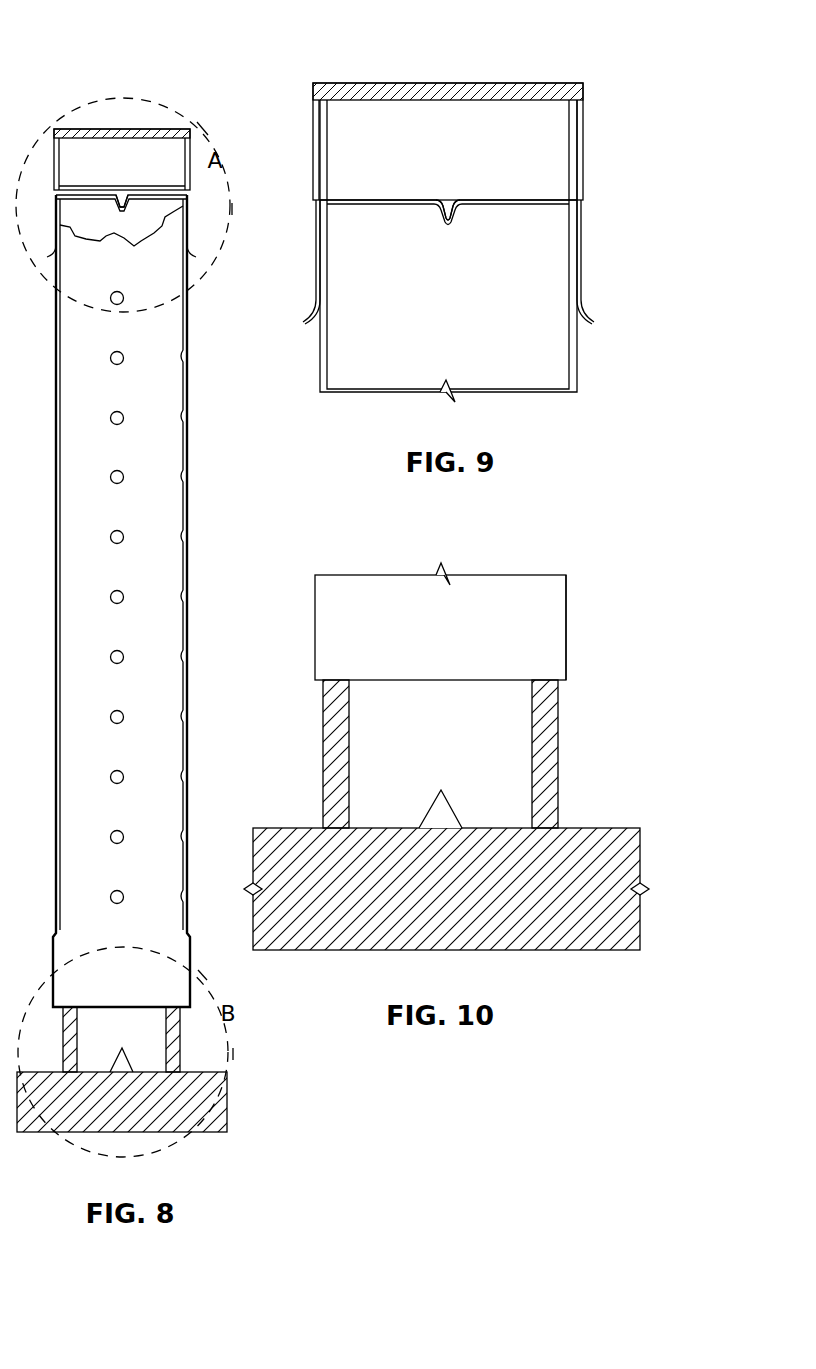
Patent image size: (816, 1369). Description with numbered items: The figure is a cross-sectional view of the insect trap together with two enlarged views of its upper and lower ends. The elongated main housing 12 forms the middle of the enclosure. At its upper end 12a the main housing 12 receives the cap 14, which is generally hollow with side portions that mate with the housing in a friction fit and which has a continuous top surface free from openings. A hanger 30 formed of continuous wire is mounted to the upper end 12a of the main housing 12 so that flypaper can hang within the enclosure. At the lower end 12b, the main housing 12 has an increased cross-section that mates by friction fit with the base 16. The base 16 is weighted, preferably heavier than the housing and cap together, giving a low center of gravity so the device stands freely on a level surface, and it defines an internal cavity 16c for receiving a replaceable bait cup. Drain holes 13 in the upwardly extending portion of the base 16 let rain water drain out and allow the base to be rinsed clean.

In FIG. 8, the main housing 12 is at (186, 458).
In FIG. 9, the main housing 12 is at (578, 360).
In FIG. 10, the main housing 12 is at (315, 612).
In FIG. 8, the upper end of the main housing 12a is at (206, 216).
In FIG. 9, the upper end of the main housing 12a is at (591, 216).
In FIG. 8, the lower end of the main housing 12b is at (198, 952).
In FIG. 10, the lower end of the main housing 12b is at (570, 600).
In FIG. 8, the drain holes 13 is at (122, 1066).
In FIG. 10, the drain holes 13 is at (441, 817).
In FIG. 8, the cap 14 is at (92, 129).
In FIG. 9, the cap 14 is at (585, 92).
In FIG. 8, the base 16 is at (220, 1127).
In FIG. 10, the base 16 is at (585, 838).
In FIG. 10, the internal cavity 16c is at (520, 723).
In FIG. 8, the hanger 30 is at (138, 200).
In FIG. 9, the hanger 30 is at (378, 200).